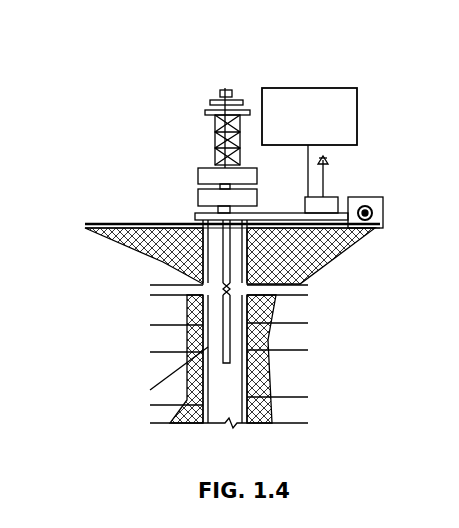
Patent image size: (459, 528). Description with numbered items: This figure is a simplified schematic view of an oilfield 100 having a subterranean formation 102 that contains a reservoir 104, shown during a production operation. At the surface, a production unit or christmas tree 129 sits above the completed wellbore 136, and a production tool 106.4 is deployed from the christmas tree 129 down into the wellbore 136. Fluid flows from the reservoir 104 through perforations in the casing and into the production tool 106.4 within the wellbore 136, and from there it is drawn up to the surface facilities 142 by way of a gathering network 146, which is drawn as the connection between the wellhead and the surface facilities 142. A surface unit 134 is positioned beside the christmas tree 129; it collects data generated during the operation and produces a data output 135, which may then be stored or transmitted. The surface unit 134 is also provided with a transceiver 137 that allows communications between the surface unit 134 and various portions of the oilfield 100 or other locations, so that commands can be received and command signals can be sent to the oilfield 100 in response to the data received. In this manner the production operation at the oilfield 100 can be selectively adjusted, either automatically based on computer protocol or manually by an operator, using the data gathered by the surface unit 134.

The oilfield 100 is at (259, 243).
The subterranean formation 102 is at (322, 330).
The reservoir 104 is at (300, 387).
The production tool 106.4 is at (200, 342).
The christmas tree 129 is at (223, 88).
The surface unit 134 is at (304, 198).
The data output 135 is at (326, 88).
The wellbore 136 is at (283, 271).
The transceiver 137 is at (325, 177).
The surface facilities 142 is at (383, 208).
The gathering network 146 is at (342, 221).